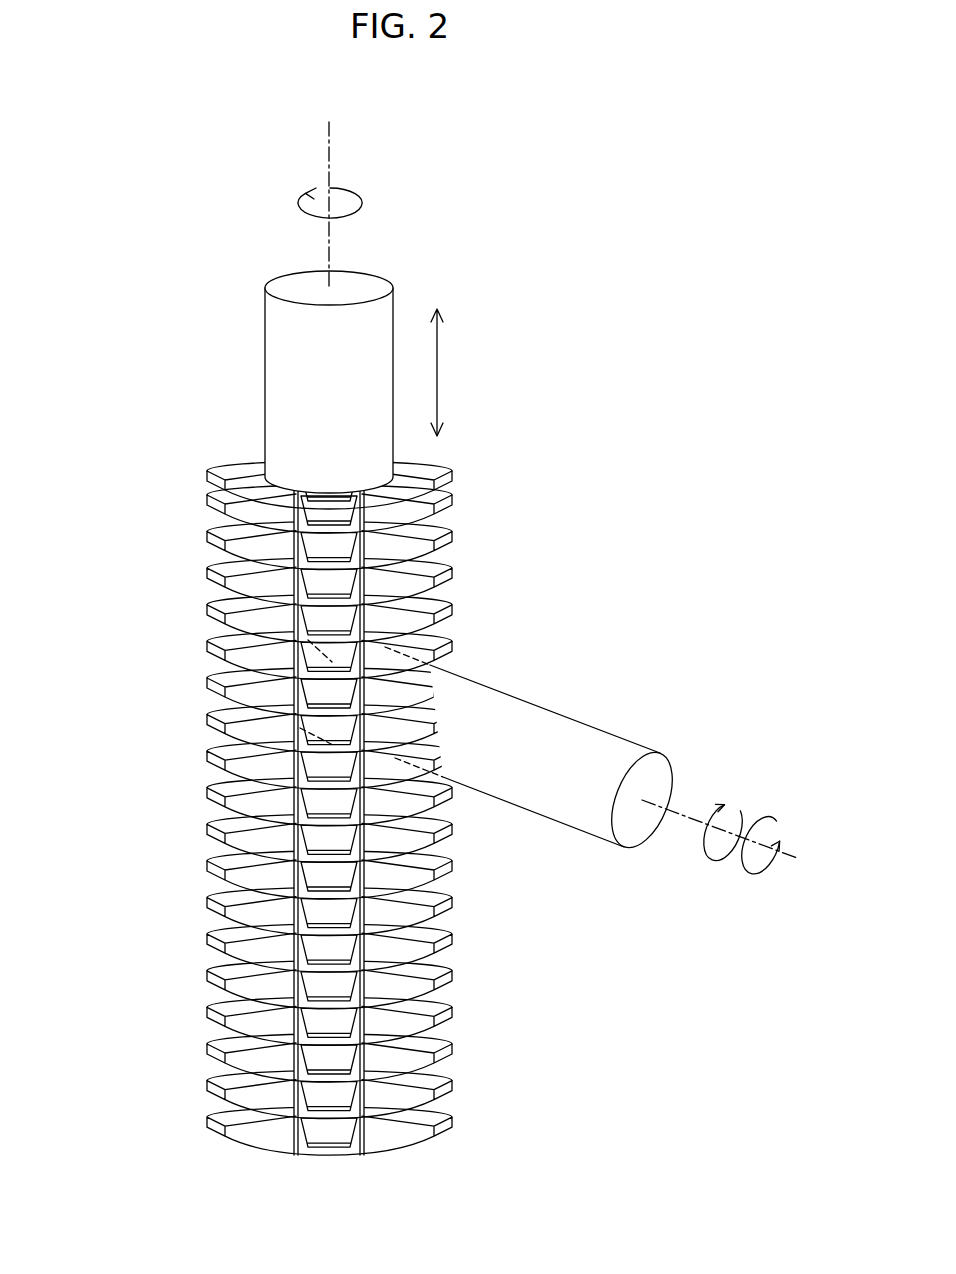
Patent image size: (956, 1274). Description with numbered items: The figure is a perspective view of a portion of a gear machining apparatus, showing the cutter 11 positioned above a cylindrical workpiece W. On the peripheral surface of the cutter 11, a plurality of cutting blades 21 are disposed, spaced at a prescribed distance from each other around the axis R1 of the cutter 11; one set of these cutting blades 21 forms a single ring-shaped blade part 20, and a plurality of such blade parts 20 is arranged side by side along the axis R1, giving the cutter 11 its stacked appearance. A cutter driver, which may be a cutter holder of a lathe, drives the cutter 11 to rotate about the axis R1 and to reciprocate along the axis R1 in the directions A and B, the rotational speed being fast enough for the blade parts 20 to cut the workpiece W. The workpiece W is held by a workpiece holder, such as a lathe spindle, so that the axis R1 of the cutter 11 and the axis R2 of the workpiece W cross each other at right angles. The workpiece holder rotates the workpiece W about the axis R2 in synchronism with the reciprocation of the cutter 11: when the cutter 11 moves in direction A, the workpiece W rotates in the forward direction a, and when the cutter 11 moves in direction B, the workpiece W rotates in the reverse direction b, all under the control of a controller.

The cutter 11 is at (128, 366).
The blade part 20 is at (314, 785).
The cutting blade 21 is at (224, 463).
The workpiece W is at (522, 808).
The axis of the cutter R1 is at (330, 192).
The axis of the workpiece R2 is at (737, 836).
The direction A is at (449, 369).
The direction B is at (449, 430).
The direction a is at (722, 818).
The direction b is at (761, 833).